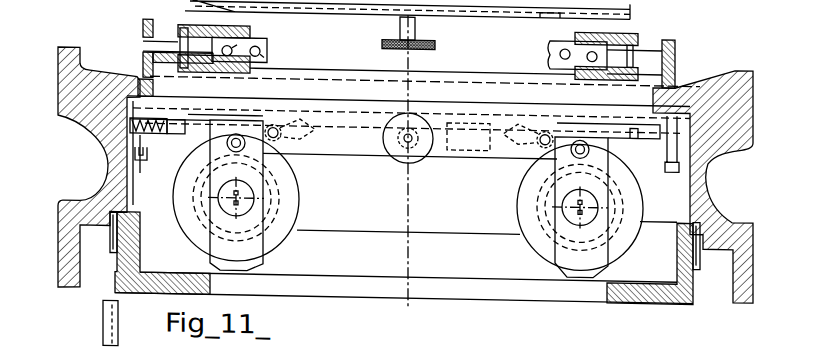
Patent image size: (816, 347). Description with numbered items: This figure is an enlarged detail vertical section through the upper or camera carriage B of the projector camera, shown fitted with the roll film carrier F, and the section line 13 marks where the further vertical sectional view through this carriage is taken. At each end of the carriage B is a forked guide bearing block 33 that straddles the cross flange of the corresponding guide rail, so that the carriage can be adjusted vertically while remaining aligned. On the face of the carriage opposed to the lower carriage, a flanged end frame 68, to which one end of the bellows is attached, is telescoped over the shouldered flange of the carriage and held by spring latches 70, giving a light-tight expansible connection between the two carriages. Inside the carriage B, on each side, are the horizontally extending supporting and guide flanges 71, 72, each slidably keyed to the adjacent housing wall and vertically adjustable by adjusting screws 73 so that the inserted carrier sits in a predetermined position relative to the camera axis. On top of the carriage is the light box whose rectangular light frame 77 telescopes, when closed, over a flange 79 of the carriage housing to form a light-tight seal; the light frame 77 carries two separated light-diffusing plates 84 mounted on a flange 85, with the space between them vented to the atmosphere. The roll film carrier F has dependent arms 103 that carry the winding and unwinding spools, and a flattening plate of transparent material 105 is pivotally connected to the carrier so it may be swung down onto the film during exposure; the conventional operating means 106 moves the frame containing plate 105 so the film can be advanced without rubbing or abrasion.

The section line 13— 13 is at (408, 173).
The guide bearing block 33 is at (58, 296).
The flanged end frame 68 is at (127, 268).
The spring latch 70 is at (110, 261).
The supporting and guide flange 71 is at (650, 136).
The supporting and guide flange 72 is at (152, 137).
The adjusting screw 73 is at (147, 161).
The light frame 77 is at (143, 31).
The flange 79 is at (140, 84).
The light-diffusing plate 84 is at (246, 36).
The flange 85 is at (409, 52).
The dependent arm 103 is at (256, 167).
The flattening plate of transparent material 105 is at (323, 117).
The operating means 106 is at (416, 156).
The camera carriage B is at (133, 211).
The roll film carrier F is at (277, 112).